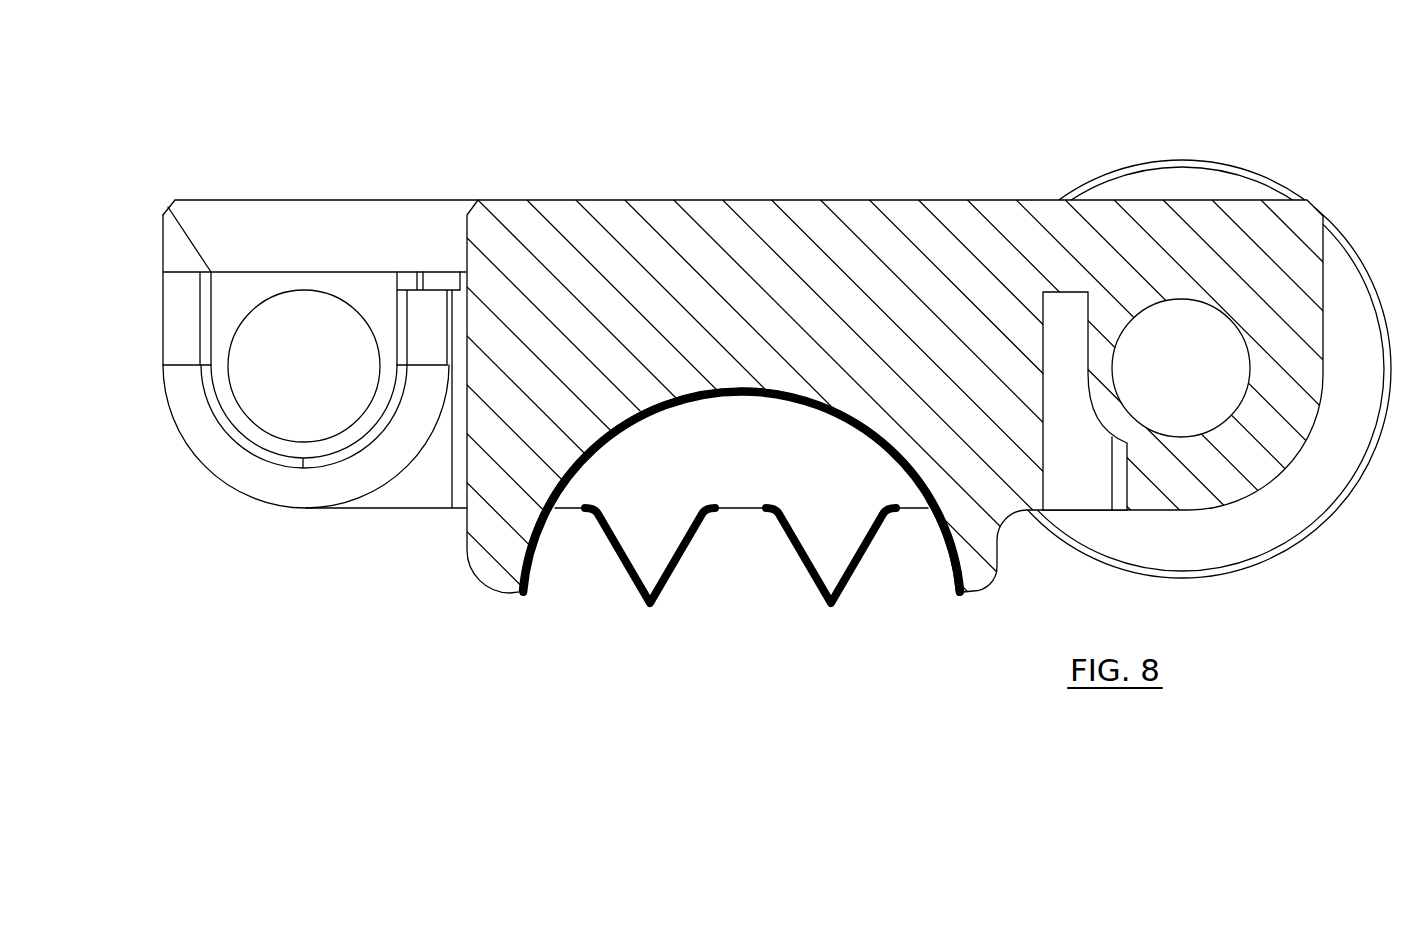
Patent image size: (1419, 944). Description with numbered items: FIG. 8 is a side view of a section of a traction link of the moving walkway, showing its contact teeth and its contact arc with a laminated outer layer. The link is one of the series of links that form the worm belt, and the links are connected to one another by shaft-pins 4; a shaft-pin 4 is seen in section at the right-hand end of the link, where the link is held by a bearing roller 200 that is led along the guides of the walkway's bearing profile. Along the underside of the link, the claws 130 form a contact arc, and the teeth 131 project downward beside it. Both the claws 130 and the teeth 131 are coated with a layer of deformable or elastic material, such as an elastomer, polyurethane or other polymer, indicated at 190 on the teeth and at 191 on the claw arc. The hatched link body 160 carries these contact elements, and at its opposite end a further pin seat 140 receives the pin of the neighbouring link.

The shaft-pin 4 is at (1225, 378).
The claw 130 is at (597, 430).
The tooth 131 is at (815, 529).
The pivot pin 140 is at (268, 308).
The housing body 160 is at (698, 200).
The layer of deformable or elastic material 190 is at (648, 608).
The layer of deformable or elastic material 191 is at (957, 570).
The bearing roller 200 is at (1247, 177).